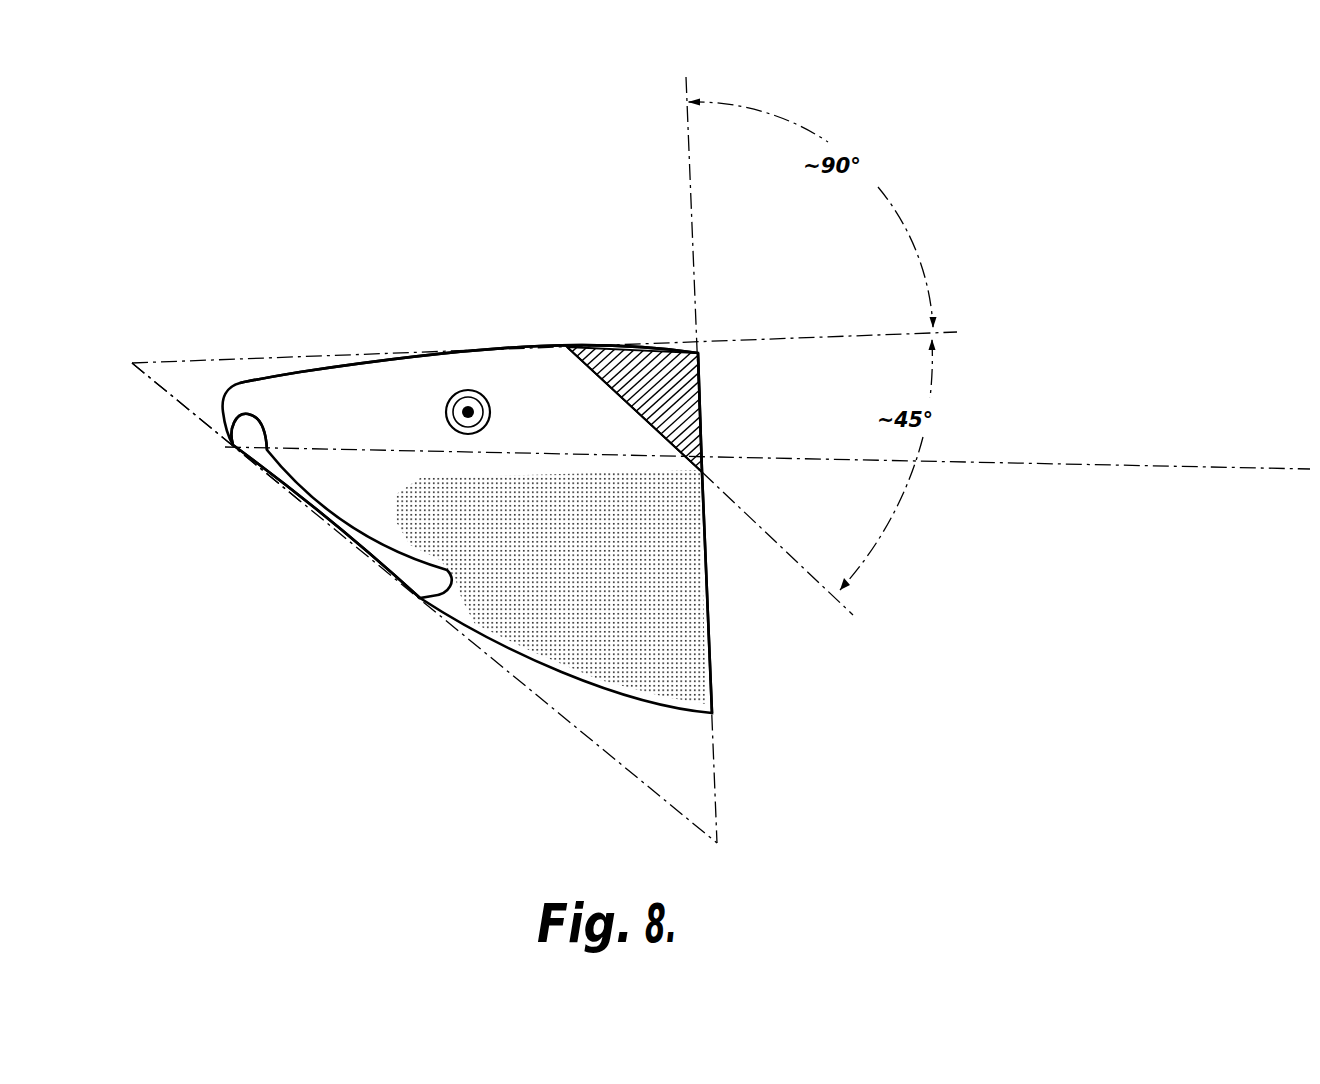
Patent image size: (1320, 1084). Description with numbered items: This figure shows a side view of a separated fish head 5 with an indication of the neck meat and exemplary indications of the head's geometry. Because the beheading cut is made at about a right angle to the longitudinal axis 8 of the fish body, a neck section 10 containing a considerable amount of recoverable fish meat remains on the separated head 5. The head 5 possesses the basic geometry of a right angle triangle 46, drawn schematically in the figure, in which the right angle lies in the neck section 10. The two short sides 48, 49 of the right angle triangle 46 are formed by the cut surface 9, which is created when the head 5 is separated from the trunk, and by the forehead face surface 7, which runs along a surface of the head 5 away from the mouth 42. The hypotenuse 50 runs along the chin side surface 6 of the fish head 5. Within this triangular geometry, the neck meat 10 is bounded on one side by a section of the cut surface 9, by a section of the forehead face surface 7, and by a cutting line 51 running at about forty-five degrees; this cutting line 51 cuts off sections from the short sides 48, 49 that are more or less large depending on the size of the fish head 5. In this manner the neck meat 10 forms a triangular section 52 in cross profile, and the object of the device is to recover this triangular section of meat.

The fish head 5 is at (473, 501).
The chin side surface 6 is at (328, 527).
The forehead face surface 7 is at (457, 352).
The longitudinal axis 8 is at (1138, 465).
The cut surface 9 is at (710, 597).
The neck section 10 is at (657, 380).
The mouth 42 is at (250, 458).
The right angle triangle 46 is at (158, 397).
The short side 48 is at (715, 757).
The short side 49 is at (317, 355).
The hypotenuse 50 is at (632, 777).
The cutting line 51 is at (787, 550).
The triangular section 52 is at (692, 383).